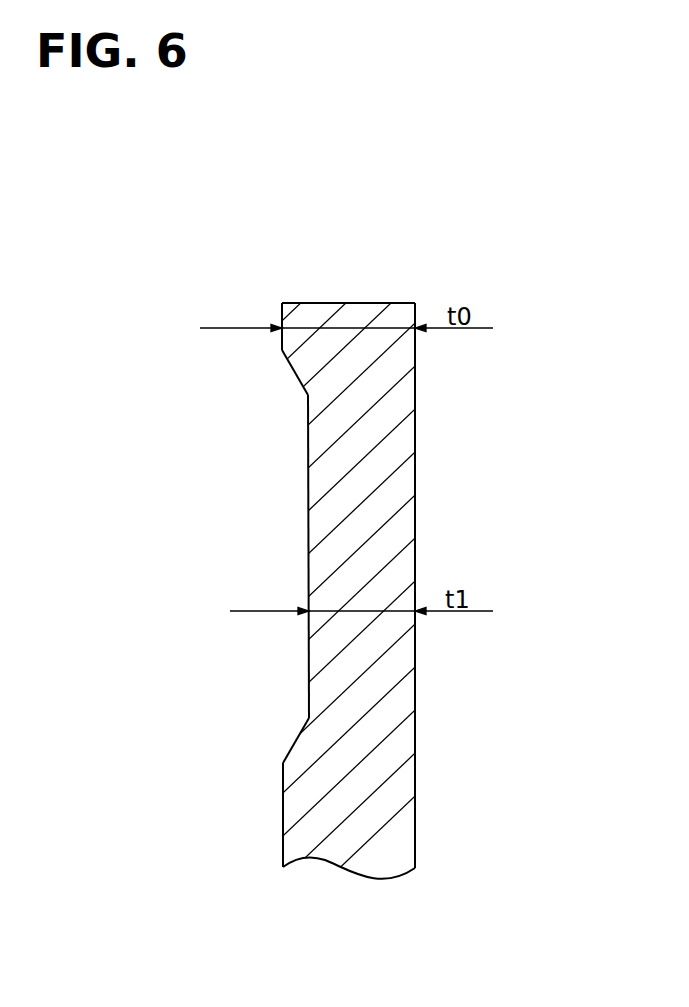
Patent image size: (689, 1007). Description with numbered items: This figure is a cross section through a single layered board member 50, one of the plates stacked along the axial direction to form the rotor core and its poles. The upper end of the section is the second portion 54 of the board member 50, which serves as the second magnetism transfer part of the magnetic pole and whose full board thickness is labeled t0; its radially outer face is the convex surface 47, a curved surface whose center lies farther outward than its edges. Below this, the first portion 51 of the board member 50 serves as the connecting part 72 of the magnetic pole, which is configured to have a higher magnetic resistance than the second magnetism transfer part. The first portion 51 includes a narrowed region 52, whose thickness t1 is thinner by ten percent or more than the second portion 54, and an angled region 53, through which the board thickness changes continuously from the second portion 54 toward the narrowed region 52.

The board member 50 is at (353, 862).
The first portion 51 is at (373, 463).
The narrowed region 52 is at (309, 533).
The angled region 53 is at (297, 375).
The second portion 54 is at (352, 315).
The convex surface 47 is at (310, 300).
The connecting part 72 is at (417, 672).